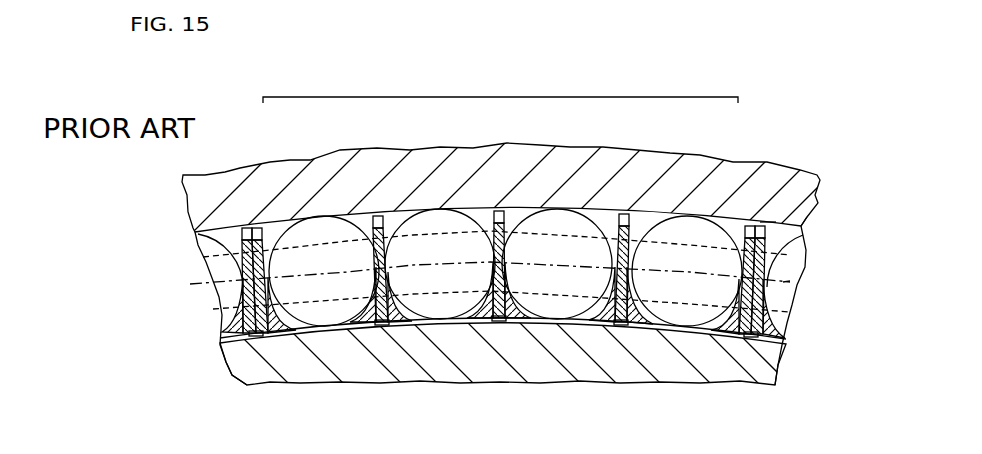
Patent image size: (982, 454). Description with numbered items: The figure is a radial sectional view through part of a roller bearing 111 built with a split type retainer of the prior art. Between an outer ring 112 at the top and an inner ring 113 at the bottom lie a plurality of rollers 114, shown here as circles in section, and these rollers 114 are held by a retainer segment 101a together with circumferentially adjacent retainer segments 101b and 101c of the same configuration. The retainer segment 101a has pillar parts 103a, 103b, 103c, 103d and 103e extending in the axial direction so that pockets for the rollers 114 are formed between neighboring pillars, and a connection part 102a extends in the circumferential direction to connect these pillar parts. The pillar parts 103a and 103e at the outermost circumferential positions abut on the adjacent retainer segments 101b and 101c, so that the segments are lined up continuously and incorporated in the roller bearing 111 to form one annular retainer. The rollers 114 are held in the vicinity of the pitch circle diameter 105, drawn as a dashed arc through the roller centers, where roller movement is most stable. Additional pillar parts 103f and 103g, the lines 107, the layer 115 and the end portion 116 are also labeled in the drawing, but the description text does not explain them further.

The roller bearing 111 is at (787, 80).
The retainer segment 101a is at (500, 90).
The retainer segment 101b is at (262, 264).
The retainer segment 101c is at (768, 222).
The connection part 102a is at (440, 254).
The pillar part 103a is at (270, 340).
The pillar part 103b is at (381, 328).
The pillar part 103c is at (502, 322).
The pillar part 103d is at (621, 326).
The pillar part 103e is at (721, 333).
The support member 103f is at (247, 347).
The support member 103g is at (765, 340).
The PCD (Pitch Circle Diameter) 105 is at (806, 288).
The light path line 107 is at (226, 308).
The outer ring 112 is at (801, 224).
The inner ring 113 is at (780, 365).
The roller 114 is at (329, 290).
The reflection sheet 115 is at (788, 330).
The side wall 116 is at (801, 226).